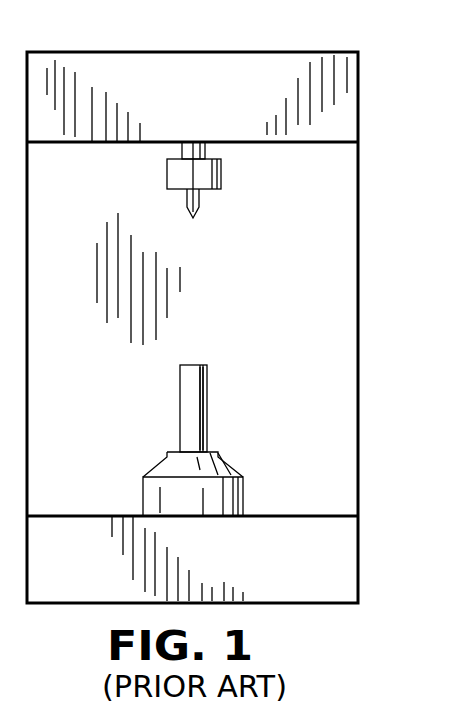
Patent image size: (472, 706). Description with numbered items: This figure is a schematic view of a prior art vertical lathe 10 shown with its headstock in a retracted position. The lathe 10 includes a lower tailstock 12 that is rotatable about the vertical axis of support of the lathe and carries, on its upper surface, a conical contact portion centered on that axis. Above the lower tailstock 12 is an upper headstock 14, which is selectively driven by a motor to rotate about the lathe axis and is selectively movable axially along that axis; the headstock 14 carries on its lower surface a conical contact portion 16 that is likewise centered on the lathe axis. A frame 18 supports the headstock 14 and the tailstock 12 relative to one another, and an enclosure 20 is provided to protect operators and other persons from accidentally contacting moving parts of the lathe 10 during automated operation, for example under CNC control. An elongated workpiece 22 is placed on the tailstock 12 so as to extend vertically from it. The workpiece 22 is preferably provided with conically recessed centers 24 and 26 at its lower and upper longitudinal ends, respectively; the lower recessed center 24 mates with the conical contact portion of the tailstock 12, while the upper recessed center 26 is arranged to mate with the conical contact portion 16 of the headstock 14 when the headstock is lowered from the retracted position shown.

The vertical lathe 10 is at (377, 171).
The lower tailstock 12 is at (162, 485).
The upper headstock 14 is at (183, 173).
The conical contact portion 16 is at (195, 209).
The frame 18 is at (347, 70).
The enclosure 20 is at (359, 305).
The elongated workpiece 22 is at (195, 395).
The conically recessed center 24 is at (193, 444).
The conically recessed center 26 is at (194, 374).